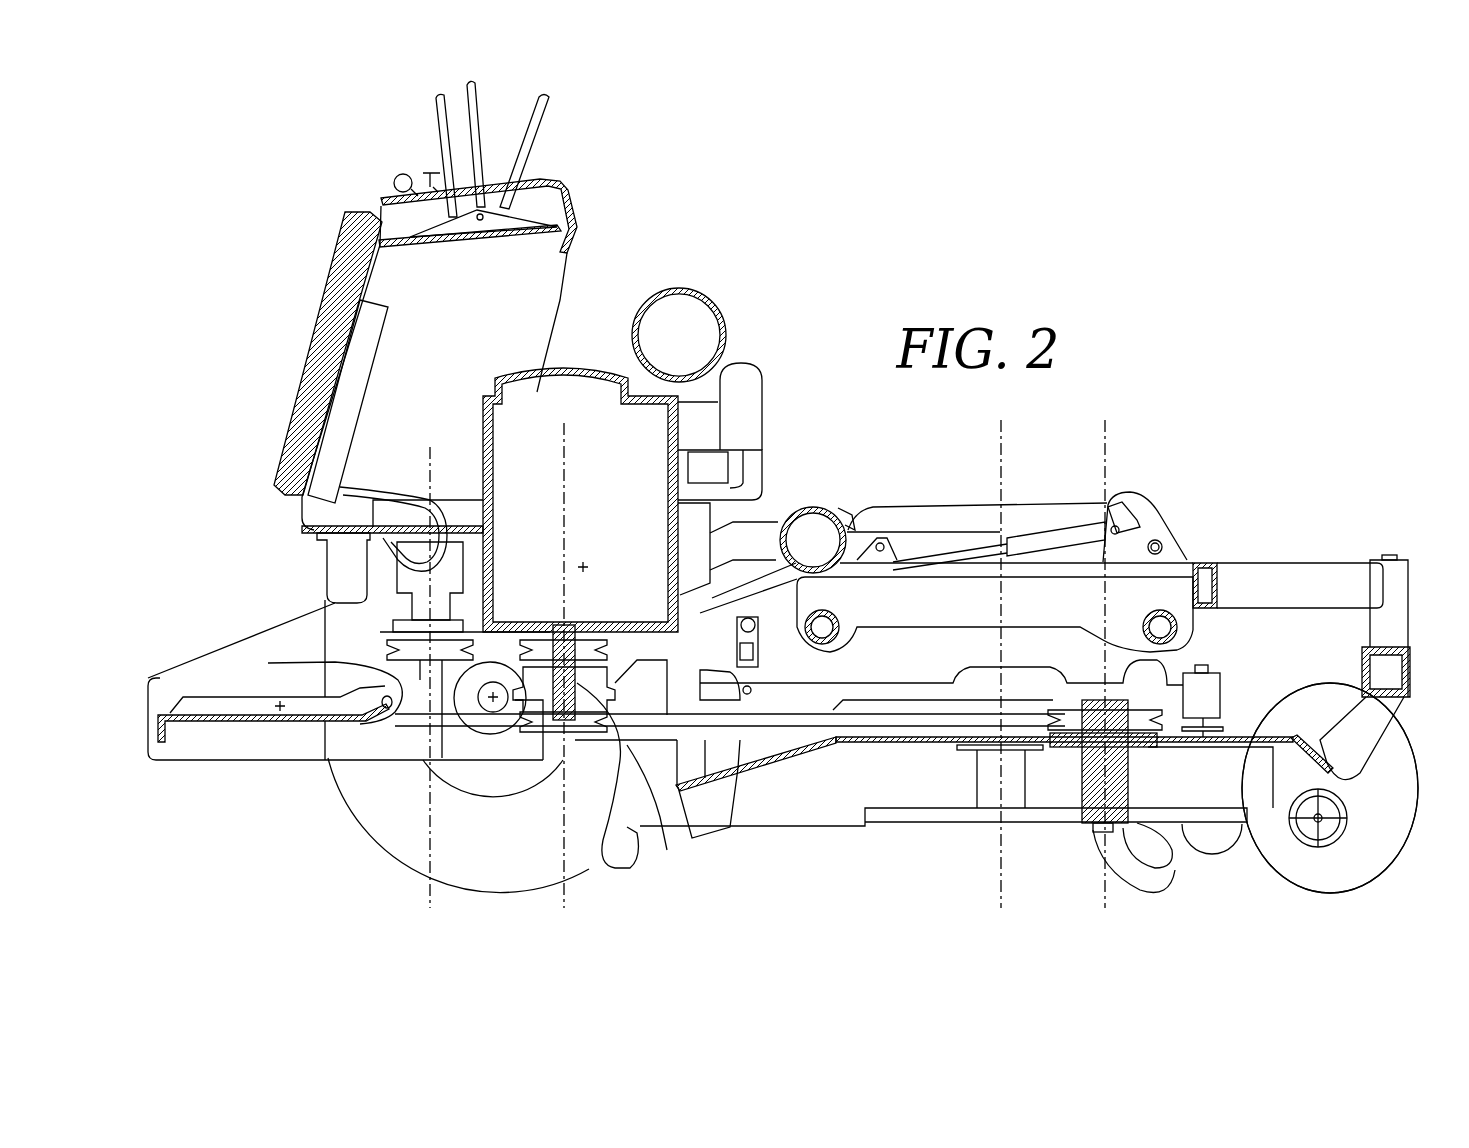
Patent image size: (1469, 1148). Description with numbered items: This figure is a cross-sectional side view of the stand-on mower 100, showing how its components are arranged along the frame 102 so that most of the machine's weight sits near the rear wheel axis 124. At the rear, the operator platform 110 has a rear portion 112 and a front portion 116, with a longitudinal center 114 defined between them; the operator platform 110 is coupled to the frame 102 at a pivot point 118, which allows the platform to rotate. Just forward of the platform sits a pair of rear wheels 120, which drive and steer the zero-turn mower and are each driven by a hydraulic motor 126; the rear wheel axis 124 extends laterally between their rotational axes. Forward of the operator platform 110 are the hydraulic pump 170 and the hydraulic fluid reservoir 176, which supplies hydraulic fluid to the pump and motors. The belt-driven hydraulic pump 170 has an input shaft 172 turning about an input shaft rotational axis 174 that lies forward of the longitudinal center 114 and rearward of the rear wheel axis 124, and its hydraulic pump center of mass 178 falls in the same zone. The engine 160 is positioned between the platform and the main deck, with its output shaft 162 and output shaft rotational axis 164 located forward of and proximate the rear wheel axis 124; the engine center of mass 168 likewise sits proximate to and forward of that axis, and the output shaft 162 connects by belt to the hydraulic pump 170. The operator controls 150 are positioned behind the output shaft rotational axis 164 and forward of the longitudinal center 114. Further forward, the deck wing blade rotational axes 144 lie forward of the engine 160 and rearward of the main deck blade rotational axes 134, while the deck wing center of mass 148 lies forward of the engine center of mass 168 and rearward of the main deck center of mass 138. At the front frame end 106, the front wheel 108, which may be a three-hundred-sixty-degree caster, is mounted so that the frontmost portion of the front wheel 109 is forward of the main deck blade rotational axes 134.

The mower 100 is at (860, 229).
The frame 102 is at (930, 580).
The front frame end 106 is at (1297, 563).
The front wheel 108 is at (1340, 883).
The frontmost portion of the at least one front wheel 109 is at (1420, 783).
The operator platform 110 is at (186, 707).
The rear portion 112 is at (145, 706).
The longitudinal center 114 is at (278, 705).
The front portion 116 is at (388, 712).
The pivot point 118 is at (268, 663).
The rear wheels 120 is at (367, 834).
The rear wheel axis 124 is at (480, 752).
The hydraulic motor 126 is at (490, 712).
The main deck blade rotational axes 134 is at (1103, 907).
The main deck center of mass 138 is at (1170, 840).
The deck wing blade rotational axes 144 is at (1000, 910).
The deck wing center of mass 148 is at (1007, 770).
The operator controls 150 is at (470, 80).
The engine 160 is at (604, 388).
The output shaft 162 is at (627, 867).
The output shaft rotational axis 164 is at (567, 906).
The engine center of mass 168 is at (586, 566).
The hydraulic pump 170 is at (412, 577).
The input shaft 172 is at (318, 633).
The input shaft rotational axis 174 is at (430, 893).
The hydraulic fluid reservoir 176 is at (352, 363).
The hydraulic pump center of mass 178 is at (423, 577).